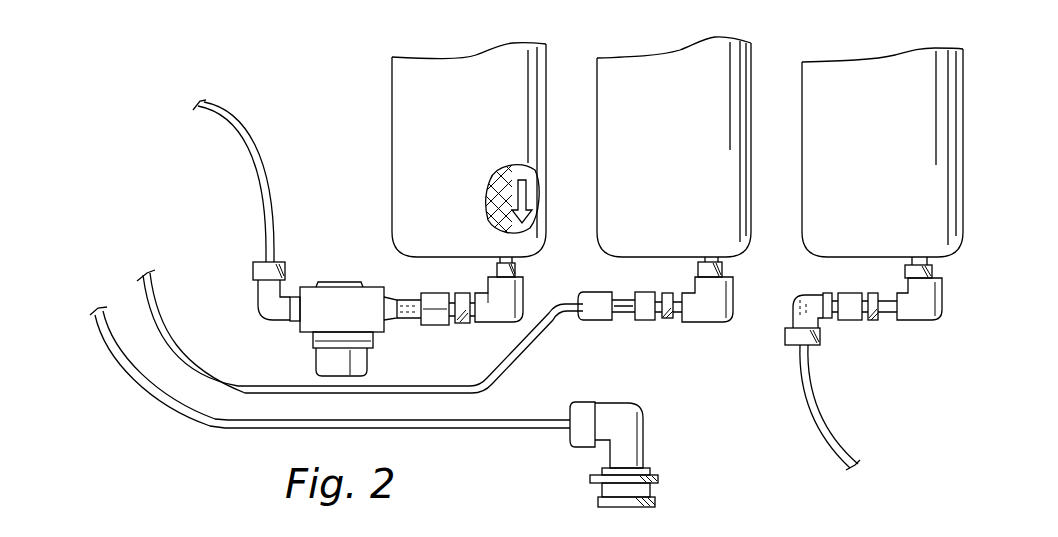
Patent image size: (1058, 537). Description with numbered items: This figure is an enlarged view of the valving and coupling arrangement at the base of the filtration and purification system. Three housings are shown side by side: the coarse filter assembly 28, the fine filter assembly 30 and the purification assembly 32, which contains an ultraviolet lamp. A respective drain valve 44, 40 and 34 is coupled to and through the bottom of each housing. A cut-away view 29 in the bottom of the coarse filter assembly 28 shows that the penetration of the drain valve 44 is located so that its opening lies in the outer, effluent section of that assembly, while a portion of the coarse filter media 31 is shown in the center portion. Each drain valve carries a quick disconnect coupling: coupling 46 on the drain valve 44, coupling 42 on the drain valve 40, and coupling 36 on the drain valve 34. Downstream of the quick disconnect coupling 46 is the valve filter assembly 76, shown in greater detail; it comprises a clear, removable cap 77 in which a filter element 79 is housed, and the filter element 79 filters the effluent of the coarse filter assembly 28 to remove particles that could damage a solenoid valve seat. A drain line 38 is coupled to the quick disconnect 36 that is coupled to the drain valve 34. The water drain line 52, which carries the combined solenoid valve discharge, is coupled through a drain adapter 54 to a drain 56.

The coarse filter assembly 28 is at (472, 126).
The fine filter assembly 30 is at (680, 126).
The purification assembly 32 is at (884, 126).
The cut-away view 29 is at (527, 177).
The coarse filter media 31 is at (533, 229).
The drain valve 44 is at (513, 298).
The quick disconnect coupling 46 is at (445, 285).
The drain valve 40 is at (730, 296).
The quick disconnect coupling 42 is at (657, 326).
The drain valve 34 is at (897, 282).
The quick disconnect coupling 36 is at (843, 325).
The drain line 38 is at (803, 398).
The water drain line 52 is at (147, 397).
The drain adapter 54 is at (643, 432).
The drain 56 is at (658, 482).
The valve filter assembly 76 is at (290, 328).
The removable cap 77 is at (318, 366).
The filter element 79 is at (378, 358).